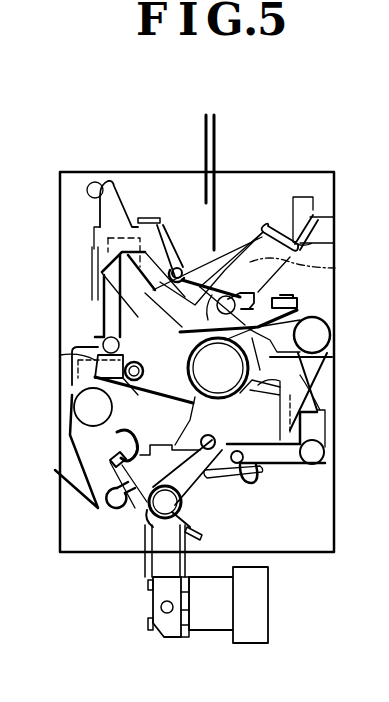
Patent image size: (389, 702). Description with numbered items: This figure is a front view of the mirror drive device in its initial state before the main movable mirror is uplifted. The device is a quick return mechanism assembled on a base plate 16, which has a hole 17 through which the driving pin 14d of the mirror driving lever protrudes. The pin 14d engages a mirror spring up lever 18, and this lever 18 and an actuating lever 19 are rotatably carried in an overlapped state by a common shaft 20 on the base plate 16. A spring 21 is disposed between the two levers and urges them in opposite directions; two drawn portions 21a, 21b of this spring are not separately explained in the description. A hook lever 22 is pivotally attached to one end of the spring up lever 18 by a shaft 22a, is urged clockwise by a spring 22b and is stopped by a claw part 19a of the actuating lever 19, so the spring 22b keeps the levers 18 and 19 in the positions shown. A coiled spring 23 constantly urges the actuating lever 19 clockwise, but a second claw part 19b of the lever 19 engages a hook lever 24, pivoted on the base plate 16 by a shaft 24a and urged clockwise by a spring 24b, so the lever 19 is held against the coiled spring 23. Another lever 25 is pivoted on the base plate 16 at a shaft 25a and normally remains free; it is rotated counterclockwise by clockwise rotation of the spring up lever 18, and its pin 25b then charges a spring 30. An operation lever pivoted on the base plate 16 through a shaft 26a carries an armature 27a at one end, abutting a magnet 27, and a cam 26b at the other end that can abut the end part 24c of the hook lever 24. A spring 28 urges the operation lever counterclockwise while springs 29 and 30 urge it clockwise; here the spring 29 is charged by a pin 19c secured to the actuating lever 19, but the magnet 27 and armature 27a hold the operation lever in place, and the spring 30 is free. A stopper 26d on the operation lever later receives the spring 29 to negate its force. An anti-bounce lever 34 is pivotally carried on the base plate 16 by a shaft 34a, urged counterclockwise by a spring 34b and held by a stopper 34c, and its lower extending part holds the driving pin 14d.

The base plate 16 is at (285, 173).
The hole 17 is at (92, 292).
The driving pin 14d is at (100, 317).
The mirror spring up lever 18 is at (300, 308).
The actuating lever 19 is at (219, 276).
The claw part 19a is at (270, 410).
The claw part 19b is at (76, 347).
The pin 19c is at (222, 458).
The shaft 20 is at (245, 352).
The spring 21 is at (238, 296).
The rod 21a is at (203, 130).
The rod 21b is at (217, 130).
The hook lever 22 is at (330, 361).
The shaft 22a is at (323, 332).
The spring 22b is at (328, 390).
The coiled spring 23 is at (334, 271).
The hook lever 24 is at (72, 373).
The shaft 24a is at (86, 404).
The spring 24b is at (74, 428).
The end part 24c is at (114, 436).
The lever 25 is at (330, 432).
The shaft 25a is at (325, 454).
The pin 25b is at (266, 464).
The shaft 26a is at (146, 513).
The cam 26b is at (110, 462).
The stopper 26d is at (171, 443).
The magnet 27 is at (210, 630).
The armature 27a is at (167, 630).
The spring 28 is at (101, 510).
The spring 29 is at (210, 536).
The spring 30 is at (248, 485).
The anti-bounce lever 34 is at (112, 180).
The shaft 34a is at (180, 270).
The spring 34b is at (153, 217).
The stopper 34c is at (97, 182).